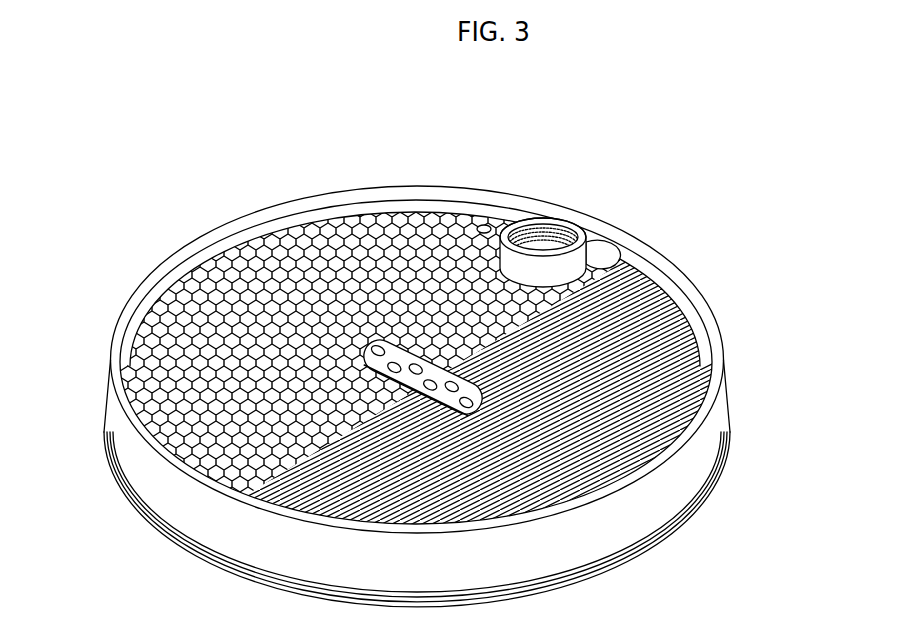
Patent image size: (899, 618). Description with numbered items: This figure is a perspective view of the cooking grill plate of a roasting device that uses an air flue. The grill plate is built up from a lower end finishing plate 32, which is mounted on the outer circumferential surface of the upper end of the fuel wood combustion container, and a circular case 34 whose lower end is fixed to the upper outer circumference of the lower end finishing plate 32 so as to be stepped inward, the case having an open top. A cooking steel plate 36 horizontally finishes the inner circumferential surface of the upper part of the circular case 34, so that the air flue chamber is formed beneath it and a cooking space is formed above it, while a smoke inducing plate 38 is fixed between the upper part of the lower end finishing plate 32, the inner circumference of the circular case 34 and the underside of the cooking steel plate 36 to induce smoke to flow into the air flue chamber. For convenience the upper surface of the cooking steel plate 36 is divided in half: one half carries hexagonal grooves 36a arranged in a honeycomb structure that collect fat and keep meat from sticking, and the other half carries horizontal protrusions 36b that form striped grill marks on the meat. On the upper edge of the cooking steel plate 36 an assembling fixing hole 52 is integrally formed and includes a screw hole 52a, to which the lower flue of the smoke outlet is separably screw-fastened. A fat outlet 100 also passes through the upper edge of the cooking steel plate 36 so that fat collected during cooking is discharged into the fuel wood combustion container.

The fat outlet 100 is at (484, 223).
The lower end finishing plate 32 is at (222, 563).
The circular case 34 is at (193, 523).
The cooking steel plate 36 is at (425, 347).
The hexagonal grooves 36a is at (333, 222).
The horizontal protrusions 36b is at (668, 298).
The smoke inducing plate 38 is at (640, 284).
The assembling fixing hole 52 is at (598, 213).
The screw hole 52a is at (558, 222).